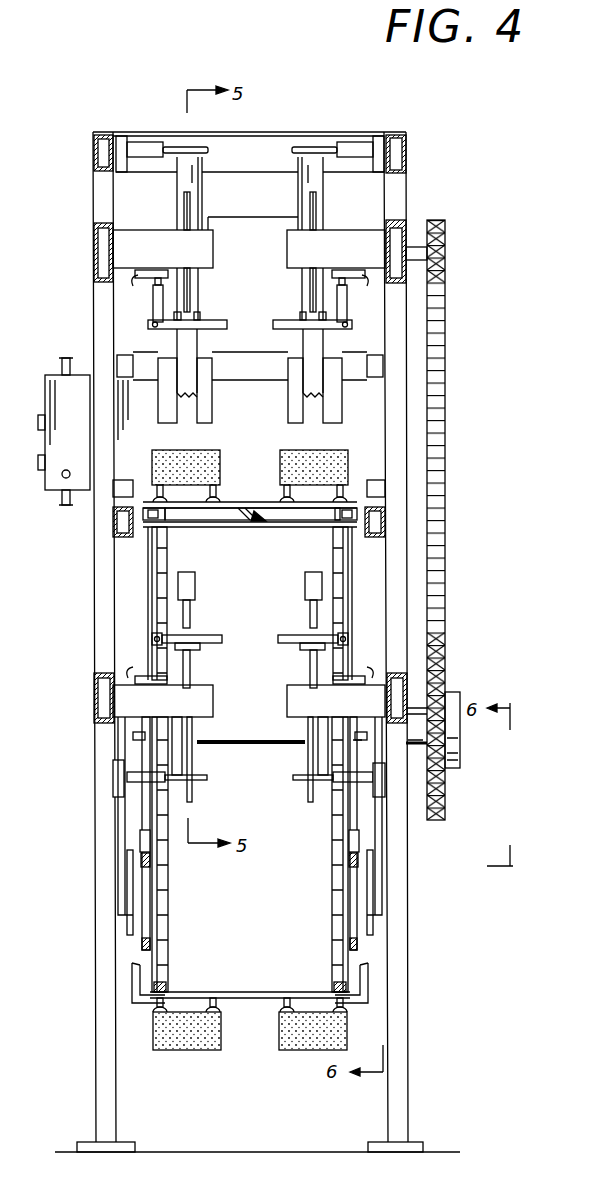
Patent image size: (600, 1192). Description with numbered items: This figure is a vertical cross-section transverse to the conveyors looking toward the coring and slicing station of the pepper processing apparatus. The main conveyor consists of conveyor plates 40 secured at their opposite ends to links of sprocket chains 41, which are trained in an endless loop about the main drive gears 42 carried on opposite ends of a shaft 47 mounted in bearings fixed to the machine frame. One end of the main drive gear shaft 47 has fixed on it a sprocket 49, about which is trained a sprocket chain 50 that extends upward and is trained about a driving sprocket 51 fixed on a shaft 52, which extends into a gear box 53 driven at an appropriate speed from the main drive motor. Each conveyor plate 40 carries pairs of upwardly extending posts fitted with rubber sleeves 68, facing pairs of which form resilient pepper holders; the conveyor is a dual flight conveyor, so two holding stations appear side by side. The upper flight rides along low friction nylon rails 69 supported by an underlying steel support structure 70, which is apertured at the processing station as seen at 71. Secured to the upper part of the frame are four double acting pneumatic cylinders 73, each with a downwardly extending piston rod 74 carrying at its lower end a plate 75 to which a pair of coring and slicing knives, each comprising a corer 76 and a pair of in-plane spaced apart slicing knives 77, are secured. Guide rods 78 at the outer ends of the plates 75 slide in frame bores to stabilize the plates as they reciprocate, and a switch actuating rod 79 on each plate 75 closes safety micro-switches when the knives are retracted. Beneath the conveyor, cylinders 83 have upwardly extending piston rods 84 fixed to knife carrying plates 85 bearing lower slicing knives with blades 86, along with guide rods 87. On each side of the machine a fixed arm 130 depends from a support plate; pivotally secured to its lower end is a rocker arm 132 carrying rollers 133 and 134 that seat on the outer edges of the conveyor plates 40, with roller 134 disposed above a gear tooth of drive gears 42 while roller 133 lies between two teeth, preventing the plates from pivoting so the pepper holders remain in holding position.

The conveyor plates 40 is at (236, 502).
The sprocket chains 41 is at (166, 902).
The main drive gears 42 is at (152, 590).
The main drive gear shaft 47 is at (272, 740).
The sprocket 49 is at (445, 672).
The sprocket chain 50 is at (447, 532).
The driving sprocket 51 is at (440, 257).
The shaft 52 is at (415, 250).
The gear box 53 is at (263, 220).
The rubber sleeve 68 is at (280, 462).
The nylon rails 69 is at (272, 523).
The steel support structure 70 is at (318, 530).
The aperture 71 is at (208, 540).
The double acting pneumatic cylinders 73 is at (178, 178).
The piston rod 74 is at (312, 292).
The plate 75 is at (278, 325).
The corer 76 is at (250, 363).
The slicing knives 77 is at (203, 435).
The guide rods 78 is at (184, 213).
The switch actuating rod 79 is at (153, 306).
The cylinders 83 is at (197, 760).
The piston rods 84 is at (310, 658).
The knife carrying plates 85 is at (278, 640).
The blades 86 is at (195, 590).
The guide rods 87 is at (193, 790).
The arm 130 is at (127, 813).
The rocker arm 132 is at (138, 921).
The roller 133 is at (148, 855).
The roller 134 is at (143, 940).